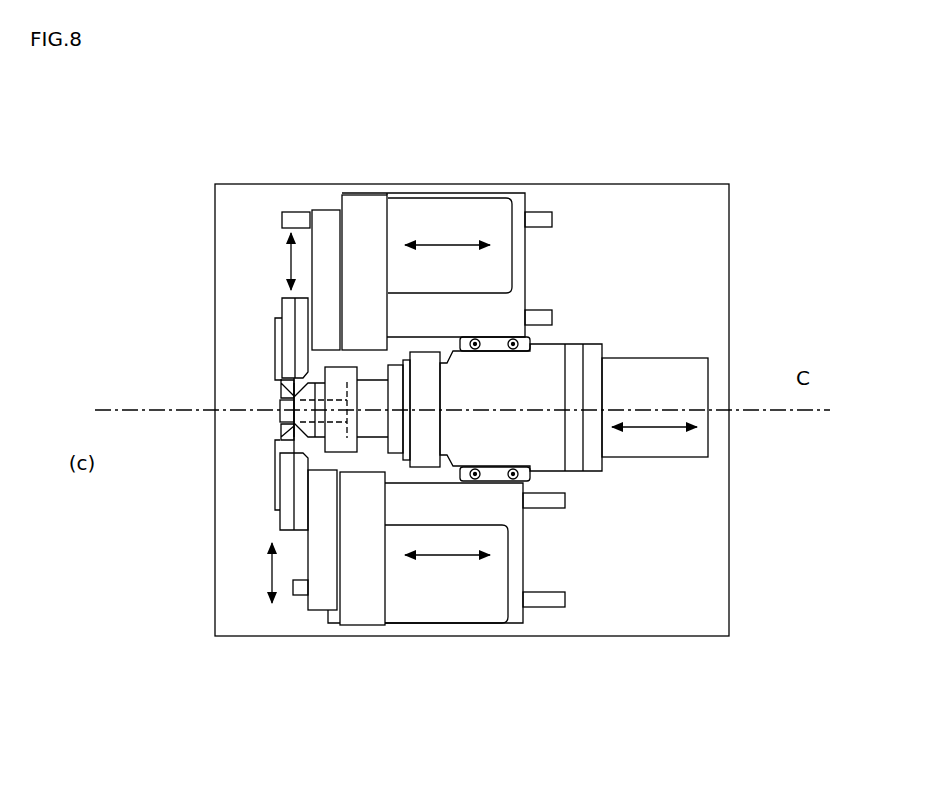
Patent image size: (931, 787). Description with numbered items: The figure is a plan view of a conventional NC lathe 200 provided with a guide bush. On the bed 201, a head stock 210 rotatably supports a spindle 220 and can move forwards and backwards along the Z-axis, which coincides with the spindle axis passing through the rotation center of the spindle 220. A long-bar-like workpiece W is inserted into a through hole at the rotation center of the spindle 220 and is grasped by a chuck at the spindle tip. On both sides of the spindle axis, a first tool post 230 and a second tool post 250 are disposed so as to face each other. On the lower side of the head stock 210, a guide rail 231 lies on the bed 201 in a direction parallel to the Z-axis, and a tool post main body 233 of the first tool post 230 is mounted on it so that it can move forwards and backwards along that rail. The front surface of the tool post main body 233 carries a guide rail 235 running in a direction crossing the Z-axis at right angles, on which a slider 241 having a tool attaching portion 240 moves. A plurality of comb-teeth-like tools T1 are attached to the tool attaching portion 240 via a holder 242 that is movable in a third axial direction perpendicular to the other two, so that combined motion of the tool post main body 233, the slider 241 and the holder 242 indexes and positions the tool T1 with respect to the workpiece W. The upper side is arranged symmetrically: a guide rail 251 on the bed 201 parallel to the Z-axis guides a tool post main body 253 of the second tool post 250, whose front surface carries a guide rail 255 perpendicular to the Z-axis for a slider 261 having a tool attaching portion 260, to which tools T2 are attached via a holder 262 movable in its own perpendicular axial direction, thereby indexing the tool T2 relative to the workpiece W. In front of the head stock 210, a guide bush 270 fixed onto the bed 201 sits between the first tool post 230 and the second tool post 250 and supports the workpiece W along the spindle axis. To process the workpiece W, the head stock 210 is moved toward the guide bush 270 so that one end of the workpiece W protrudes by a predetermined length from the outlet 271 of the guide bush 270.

The NC lathe 200 is at (550, 107).
The bed 201 is at (638, 223).
The head stock 210 is at (685, 375).
The spindle 220 is at (373, 392).
The first tool post 230 is at (408, 627).
The guide rail 231 is at (550, 607).
The tool post main body 233 is at (455, 608).
The guide rail 235 is at (360, 620).
The tool attaching portion 240 is at (280, 530).
The slider 241 is at (322, 605).
The holder 242 is at (275, 505).
The second tool post 250 is at (405, 192).
The guide rail 251 is at (538, 210).
The tool post main body 253 is at (460, 205).
The guide rail 255 is at (345, 197).
The tool attaching portion 260 is at (282, 300).
The slider 261 is at (322, 207).
The holder 262 is at (278, 345).
The guide bush 270 is at (340, 438).
The outlet 271 is at (277, 416).
The tool T1 is at (276, 434).
The tool T2 is at (276, 389).
The workpiece W is at (278, 408).